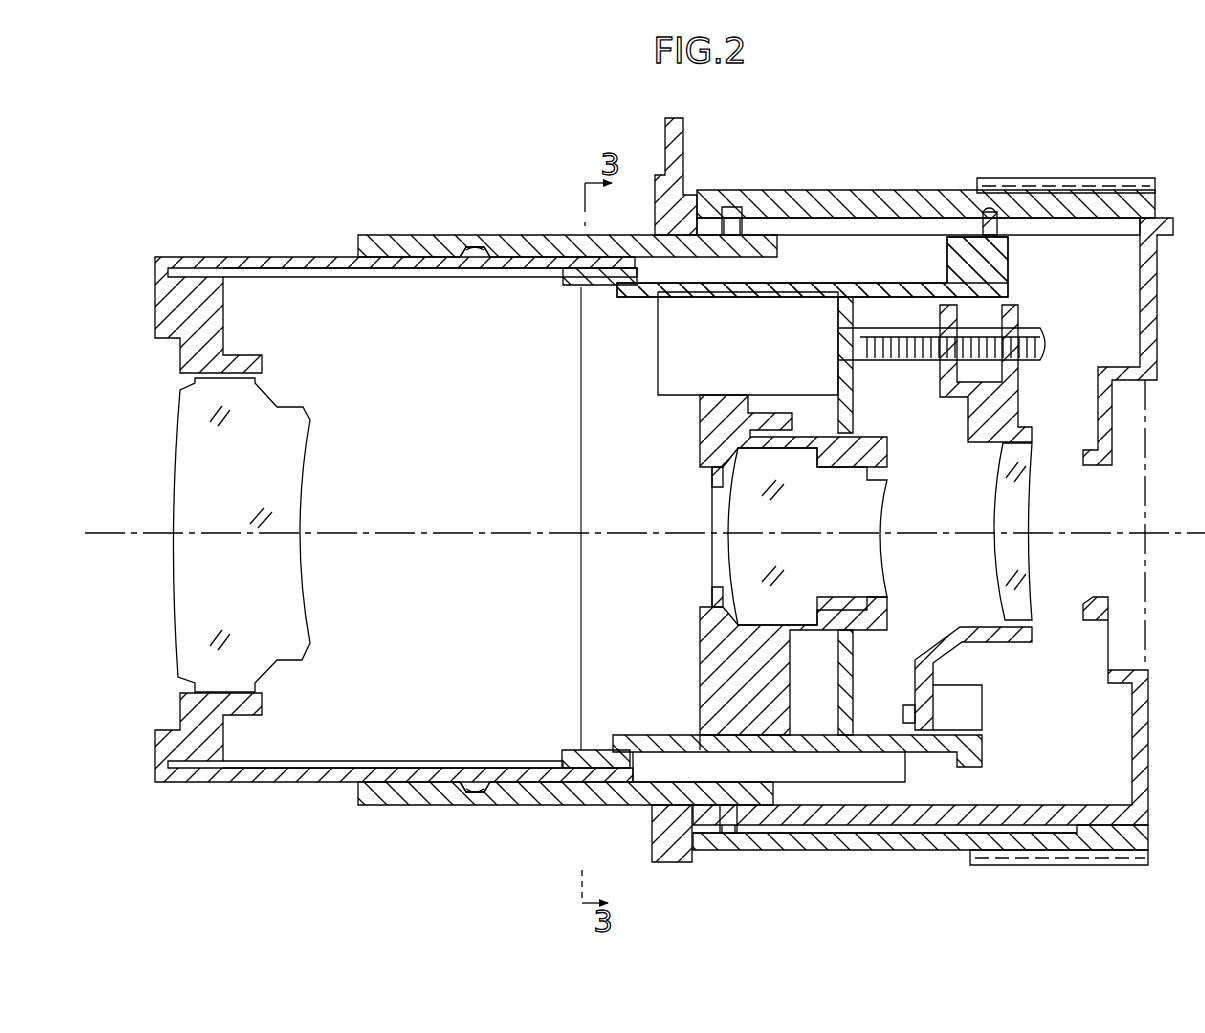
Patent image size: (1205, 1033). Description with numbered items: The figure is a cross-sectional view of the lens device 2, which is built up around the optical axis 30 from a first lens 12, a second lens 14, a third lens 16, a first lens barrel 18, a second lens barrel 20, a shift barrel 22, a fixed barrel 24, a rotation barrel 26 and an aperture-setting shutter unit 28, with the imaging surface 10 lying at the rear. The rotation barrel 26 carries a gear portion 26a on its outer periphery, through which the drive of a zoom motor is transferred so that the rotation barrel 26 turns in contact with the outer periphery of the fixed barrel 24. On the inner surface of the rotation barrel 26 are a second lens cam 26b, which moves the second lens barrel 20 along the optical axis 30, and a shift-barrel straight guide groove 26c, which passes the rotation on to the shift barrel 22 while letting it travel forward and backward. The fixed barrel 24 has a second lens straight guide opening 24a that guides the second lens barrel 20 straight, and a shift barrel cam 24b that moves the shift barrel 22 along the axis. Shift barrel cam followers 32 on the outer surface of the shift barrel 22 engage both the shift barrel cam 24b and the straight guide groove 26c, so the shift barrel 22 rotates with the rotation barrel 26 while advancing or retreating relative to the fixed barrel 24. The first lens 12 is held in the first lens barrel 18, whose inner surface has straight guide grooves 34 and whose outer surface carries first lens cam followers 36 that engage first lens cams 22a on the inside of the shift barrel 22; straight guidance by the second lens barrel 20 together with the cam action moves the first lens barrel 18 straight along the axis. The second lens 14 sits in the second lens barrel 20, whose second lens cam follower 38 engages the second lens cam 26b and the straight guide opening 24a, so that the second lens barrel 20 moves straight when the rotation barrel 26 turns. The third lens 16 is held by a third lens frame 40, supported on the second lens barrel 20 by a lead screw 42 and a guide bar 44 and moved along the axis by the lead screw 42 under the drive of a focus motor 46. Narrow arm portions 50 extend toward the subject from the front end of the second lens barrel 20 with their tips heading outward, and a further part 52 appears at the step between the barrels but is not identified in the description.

The lens device 2 is at (518, 170).
The imaging surface 10 is at (1148, 464).
The first lens 12 is at (175, 633).
The second lens 14 is at (880, 514).
The third lens 16 is at (1028, 515).
The first lens barrel 18 is at (275, 783).
The second lens barrel 20 is at (918, 761).
The shift barrel 22 is at (600, 787).
The first lens cam 22a is at (478, 250).
The fixed barrel 24 is at (675, 864).
The second lens straight guide opening 24a is at (880, 227).
The shift barrel cam 24b is at (732, 832).
The rotation barrel 26 is at (936, 852).
The gear portion 26a is at (1118, 178).
The second lens cam 26b is at (987, 212).
The shift-barrel straight guide groove 26c is at (872, 832).
The aperture-setting shutter unit 28 is at (694, 633).
The optical axis 30 is at (115, 534).
The shift barrel cam follower 32 is at (732, 212).
The straight guide groove 34 is at (310, 273).
The first lens cam follower 36 is at (462, 250).
The second lens cam follower 38 is at (997, 225).
The third lens frame 40 is at (1018, 420).
The lead screw 42 is at (1043, 337).
The guide bar 44 is at (985, 712).
The focus motor 46 is at (660, 372).
The arm portion 50 is at (635, 300).
The spacer 52 is at (583, 283).